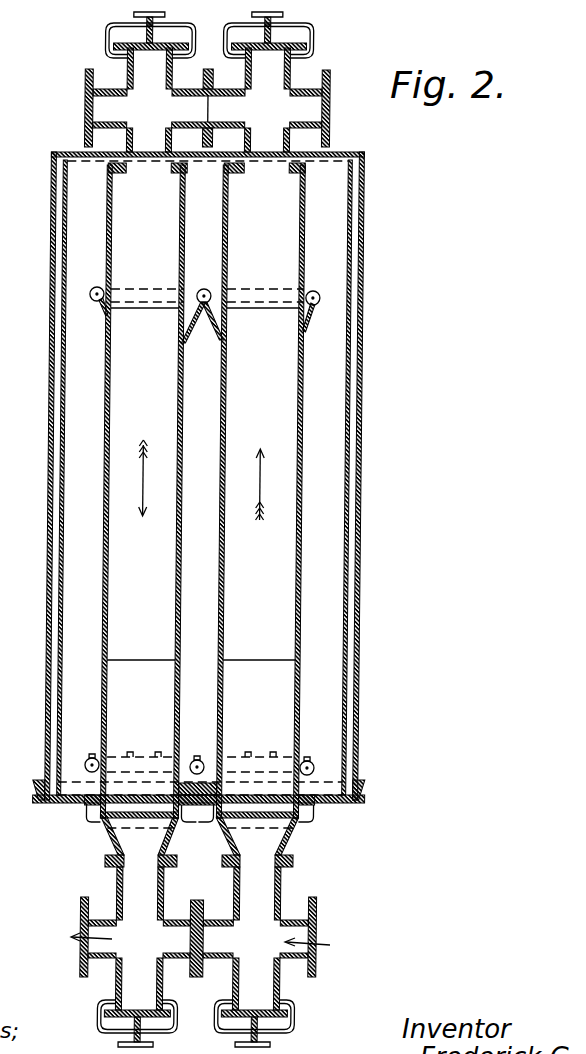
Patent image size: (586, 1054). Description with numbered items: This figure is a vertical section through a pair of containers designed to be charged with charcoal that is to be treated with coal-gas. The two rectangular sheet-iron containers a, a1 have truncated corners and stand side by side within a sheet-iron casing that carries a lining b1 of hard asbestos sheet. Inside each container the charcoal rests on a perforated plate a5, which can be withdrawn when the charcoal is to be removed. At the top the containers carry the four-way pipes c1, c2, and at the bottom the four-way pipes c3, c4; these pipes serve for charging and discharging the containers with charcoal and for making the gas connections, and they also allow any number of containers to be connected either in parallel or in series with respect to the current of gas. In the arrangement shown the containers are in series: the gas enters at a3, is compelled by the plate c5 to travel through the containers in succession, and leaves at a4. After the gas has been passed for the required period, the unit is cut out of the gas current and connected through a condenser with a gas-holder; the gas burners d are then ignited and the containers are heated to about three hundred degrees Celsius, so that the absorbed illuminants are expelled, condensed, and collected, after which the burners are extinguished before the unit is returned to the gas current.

The rectangular sheet iron container a is at (153, 492).
The rectangular sheet iron container a1 is at (268, 492).
The gas inlet a3 is at (319, 931).
The gas outlet a4 is at (72, 940).
The perforated plate a5 is at (334, 845).
The lining of hard asbestos sheet b1 is at (60, 240).
The four-way pipe c1 is at (164, 82).
The four-way pipe c2 is at (276, 82).
The four-way pipe c3 is at (135, 957).
The four-way pipe c4 is at (259, 957).
The plate c5 is at (190, 928).
The gas burner d is at (101, 308).